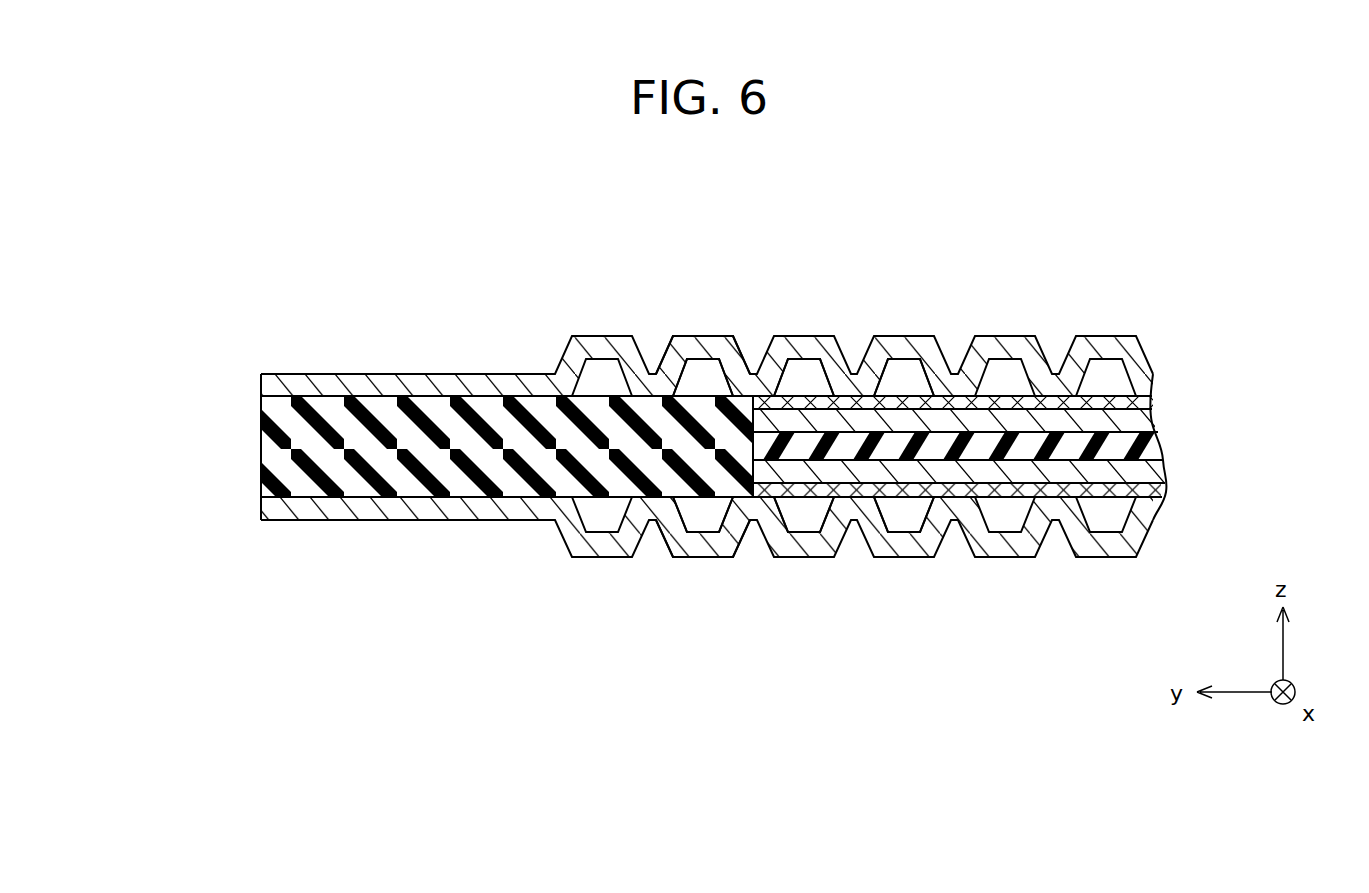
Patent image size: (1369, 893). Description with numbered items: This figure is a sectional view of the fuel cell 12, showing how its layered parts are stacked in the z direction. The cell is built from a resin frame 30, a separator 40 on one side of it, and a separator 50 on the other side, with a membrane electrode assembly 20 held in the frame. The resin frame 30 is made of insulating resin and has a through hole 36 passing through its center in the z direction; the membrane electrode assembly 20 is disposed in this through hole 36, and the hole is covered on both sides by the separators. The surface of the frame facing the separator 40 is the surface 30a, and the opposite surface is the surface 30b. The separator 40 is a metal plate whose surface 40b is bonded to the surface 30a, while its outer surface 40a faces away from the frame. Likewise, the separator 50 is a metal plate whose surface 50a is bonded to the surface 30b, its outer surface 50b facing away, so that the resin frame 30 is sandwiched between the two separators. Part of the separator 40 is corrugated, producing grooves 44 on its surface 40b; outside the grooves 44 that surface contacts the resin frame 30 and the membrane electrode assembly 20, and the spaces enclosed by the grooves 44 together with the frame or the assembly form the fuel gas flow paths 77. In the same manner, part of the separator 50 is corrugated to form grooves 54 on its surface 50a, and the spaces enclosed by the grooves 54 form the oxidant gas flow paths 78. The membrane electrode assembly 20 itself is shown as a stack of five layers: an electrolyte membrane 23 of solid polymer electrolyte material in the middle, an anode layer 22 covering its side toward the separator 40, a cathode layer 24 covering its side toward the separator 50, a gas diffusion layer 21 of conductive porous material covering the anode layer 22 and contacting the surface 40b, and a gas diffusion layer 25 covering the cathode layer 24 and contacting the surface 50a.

The fuel cell 12 is at (182, 265).
The membrane electrode assembly 20 is at (1262, 350).
The gas diffusion layer 21 is at (1150, 402).
The anode layer 22 is at (1153, 422).
The electrolyte membrane 23 is at (1145, 440).
The cathode layer 24 is at (1153, 475).
The gas diffusion layer 25 is at (1160, 497).
The resin frame 30 is at (268, 455).
The surface 30a is at (527, 396).
The surface 30b is at (527, 497).
The through hole 36 is at (755, 447).
The separator 40 is at (260, 385).
The surface 40a is at (403, 373).
The surface 40b is at (447, 388).
The grooves 44 is at (677, 354).
The separator 50 is at (270, 514).
The surface 50a is at (452, 498).
The surface 50b is at (403, 520).
The grooves 54 is at (688, 543).
The fuel gas flow paths 77 is at (903, 370).
The oxidant gas flow paths 78 is at (903, 522).